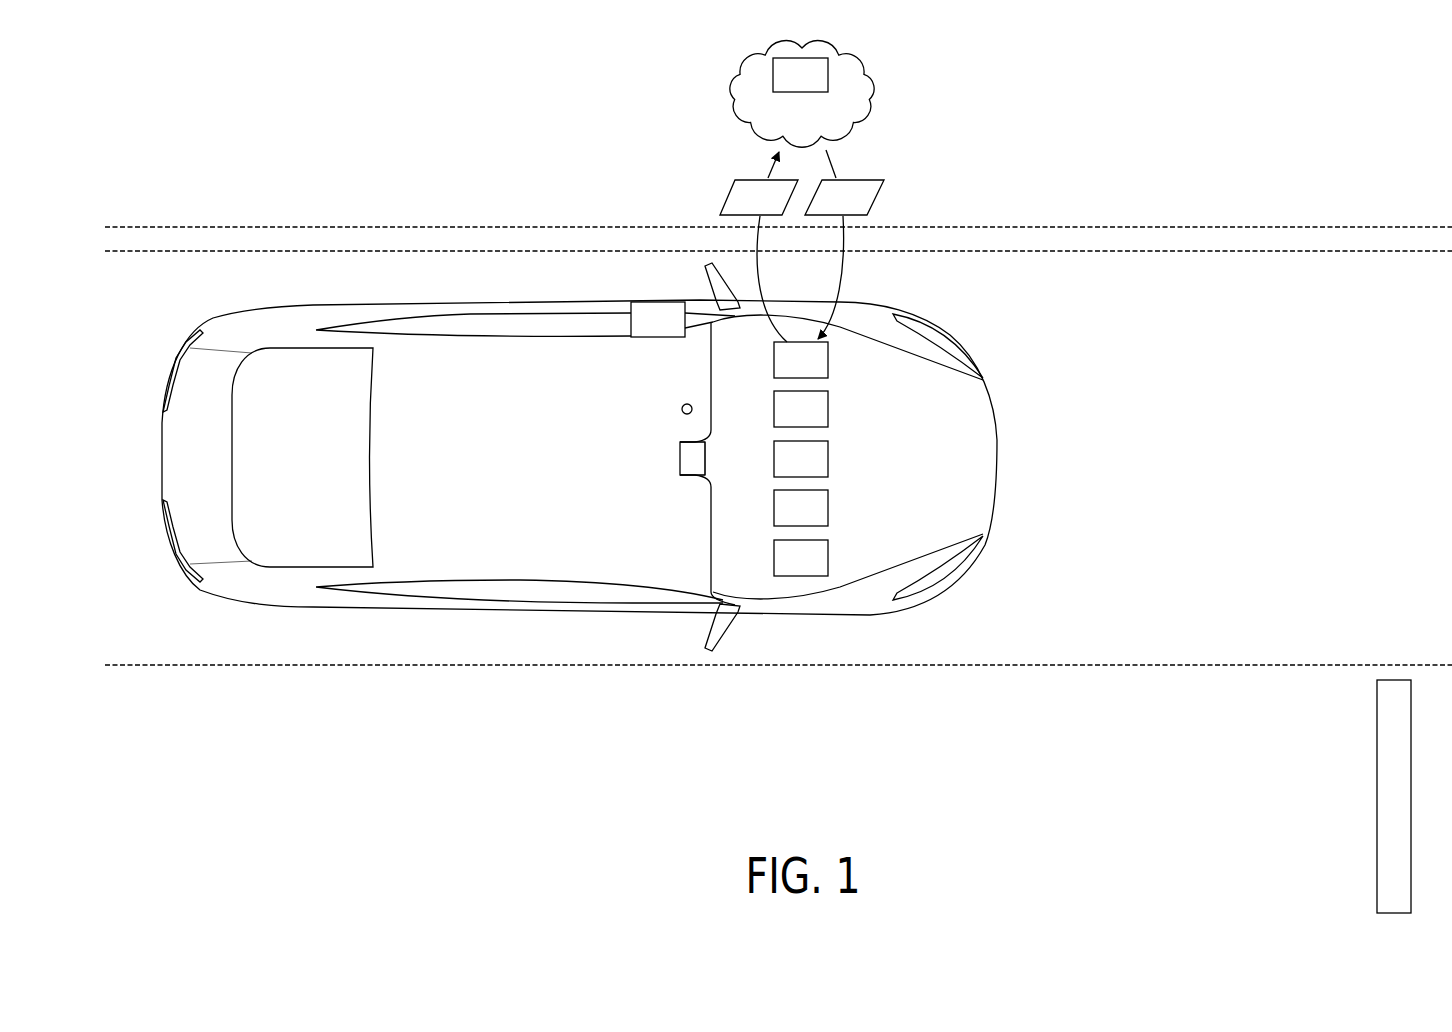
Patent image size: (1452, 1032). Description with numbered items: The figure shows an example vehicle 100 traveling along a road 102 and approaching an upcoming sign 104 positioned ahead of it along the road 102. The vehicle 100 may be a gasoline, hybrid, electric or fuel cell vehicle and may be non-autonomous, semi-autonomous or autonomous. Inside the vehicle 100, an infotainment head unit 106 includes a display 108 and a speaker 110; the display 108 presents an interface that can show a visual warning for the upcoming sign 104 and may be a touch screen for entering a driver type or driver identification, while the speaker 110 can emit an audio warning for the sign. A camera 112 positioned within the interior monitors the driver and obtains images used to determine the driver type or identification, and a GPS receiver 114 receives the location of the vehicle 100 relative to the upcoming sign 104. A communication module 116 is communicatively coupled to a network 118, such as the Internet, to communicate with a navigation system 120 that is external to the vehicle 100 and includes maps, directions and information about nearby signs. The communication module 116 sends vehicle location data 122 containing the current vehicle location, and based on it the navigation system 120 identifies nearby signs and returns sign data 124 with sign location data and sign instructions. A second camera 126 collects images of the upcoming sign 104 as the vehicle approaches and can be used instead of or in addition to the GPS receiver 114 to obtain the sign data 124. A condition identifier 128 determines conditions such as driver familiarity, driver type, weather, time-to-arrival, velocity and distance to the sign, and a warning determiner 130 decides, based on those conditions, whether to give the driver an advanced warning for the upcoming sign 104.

The vehicle 100 is at (163, 414).
The road 102 is at (1178, 670).
The upcoming sign 104 is at (1377, 870).
The infotainment head unit 106 is at (669, 468).
The display 108 is at (679, 455).
The speaker 110 is at (640, 332).
The camera 112 is at (681, 408).
The GPS receiver 114 is at (783, 421).
The communication module 116 is at (783, 372).
The network 118 is at (783, 126).
The navigation system 120 is at (783, 87).
The vehicle location data 122 is at (742, 210).
The sign data 124 is at (827, 210).
The camera 126 is at (783, 471).
The condition identifier 128 is at (783, 520).
The warning determiner 130 is at (783, 570).